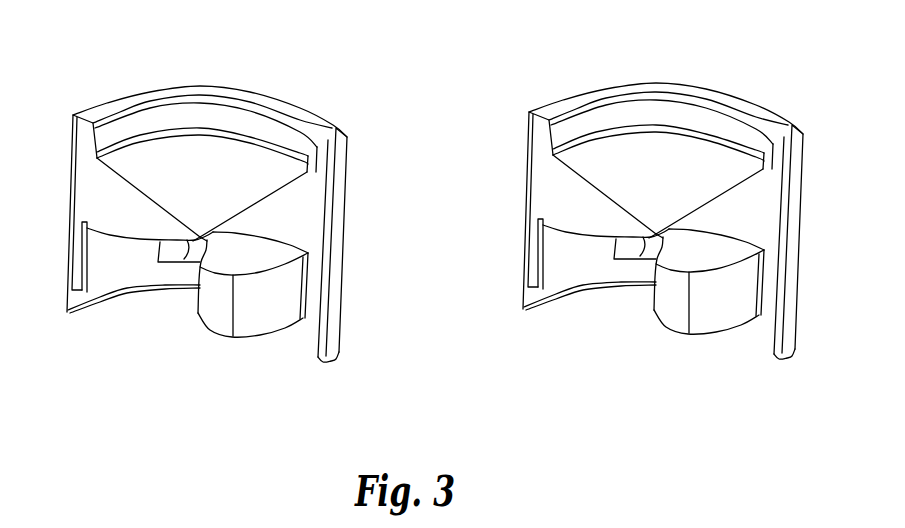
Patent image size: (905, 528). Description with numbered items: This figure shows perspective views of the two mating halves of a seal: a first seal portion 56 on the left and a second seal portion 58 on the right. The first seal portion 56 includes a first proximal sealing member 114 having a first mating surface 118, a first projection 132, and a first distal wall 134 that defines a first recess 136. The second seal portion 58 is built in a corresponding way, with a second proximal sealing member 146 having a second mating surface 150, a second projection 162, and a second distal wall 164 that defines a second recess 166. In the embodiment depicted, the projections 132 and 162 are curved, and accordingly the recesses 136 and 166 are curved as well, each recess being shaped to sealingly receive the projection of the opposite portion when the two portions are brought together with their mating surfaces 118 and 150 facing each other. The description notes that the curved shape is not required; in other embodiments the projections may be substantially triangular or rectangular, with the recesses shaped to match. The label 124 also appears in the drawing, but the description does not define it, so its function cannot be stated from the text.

The first seal portion 56 is at (98, 68).
The second seal portion 58 is at (783, 73).
The first proximal sealing member 114 is at (263, 199).
The first mating surface 118 is at (113, 207).
The cylindrical hub 124 is at (282, 297).
The first projection 132 is at (268, 322).
The first distal wall 134 is at (128, 252).
The first recess 136 is at (106, 261).
The second proximal sealing member 146 is at (720, 197).
The second mating surface 150 is at (543, 203).
The second projection 162 is at (690, 333).
The second distal wall 164 is at (553, 257).
The second recess 166 is at (602, 247).